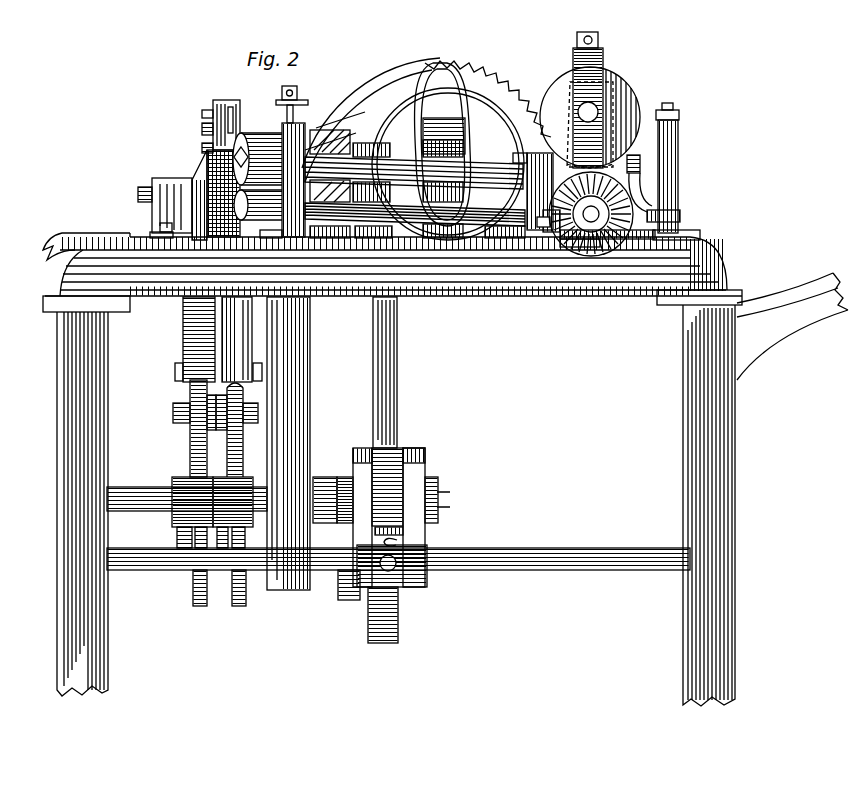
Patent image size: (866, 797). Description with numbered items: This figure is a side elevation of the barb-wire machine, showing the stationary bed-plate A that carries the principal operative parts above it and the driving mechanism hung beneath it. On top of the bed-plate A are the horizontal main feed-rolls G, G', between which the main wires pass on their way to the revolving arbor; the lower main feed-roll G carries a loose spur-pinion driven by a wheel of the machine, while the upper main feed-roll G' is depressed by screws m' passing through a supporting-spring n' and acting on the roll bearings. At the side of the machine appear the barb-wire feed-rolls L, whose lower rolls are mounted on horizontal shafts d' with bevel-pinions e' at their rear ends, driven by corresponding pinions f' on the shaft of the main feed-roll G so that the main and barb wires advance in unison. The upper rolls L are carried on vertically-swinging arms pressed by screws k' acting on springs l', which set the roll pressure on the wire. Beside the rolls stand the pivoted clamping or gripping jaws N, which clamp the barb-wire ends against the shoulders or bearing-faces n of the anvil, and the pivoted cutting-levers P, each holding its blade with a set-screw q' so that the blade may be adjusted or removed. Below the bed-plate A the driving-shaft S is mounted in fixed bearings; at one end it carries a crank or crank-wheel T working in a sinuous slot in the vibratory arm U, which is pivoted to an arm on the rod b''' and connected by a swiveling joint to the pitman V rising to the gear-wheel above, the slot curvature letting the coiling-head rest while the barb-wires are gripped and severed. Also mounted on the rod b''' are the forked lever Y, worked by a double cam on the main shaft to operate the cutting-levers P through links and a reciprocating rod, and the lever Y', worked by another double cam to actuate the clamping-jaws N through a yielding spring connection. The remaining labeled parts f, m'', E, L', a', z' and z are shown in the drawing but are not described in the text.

The bed-plate A is at (445, 458).
The clamping or gripping jaws N is at (190, 177).
The cutting-levers P is at (230, 173).
The set-screw q' is at (193, 131).
The feed-rolls L is at (257, 176).
The screws k' is at (300, 156).
The springs l' is at (340, 102).
The arm f is at (334, 128).
The spring arm m'' is at (371, 114).
The shoulders or bearing-faces n is at (442, 126).
The gear wheel E is at (504, 79).
The horizontal shafts d' is at (415, 195).
The screws m' is at (604, 32).
The supporting-spring n' is at (607, 103).
The main feed-roll G' is at (602, 117).
The main feed-roll G is at (628, 205).
The bevel-pinions f' is at (685, 171).
The bevel-pinions e' is at (573, 277).
The pitman V is at (397, 380).
The bearing block L' is at (390, 517).
The set screw a' is at (400, 534).
The driving-shaft S is at (137, 503).
The lever Y' is at (178, 428).
The forked lever Y is at (272, 430).
The rod b''' is at (398, 547).
The block z' is at (186, 598).
The block z is at (251, 598).
The crank or crank-wheel T is at (338, 600).
The vibratory arm U is at (399, 619).